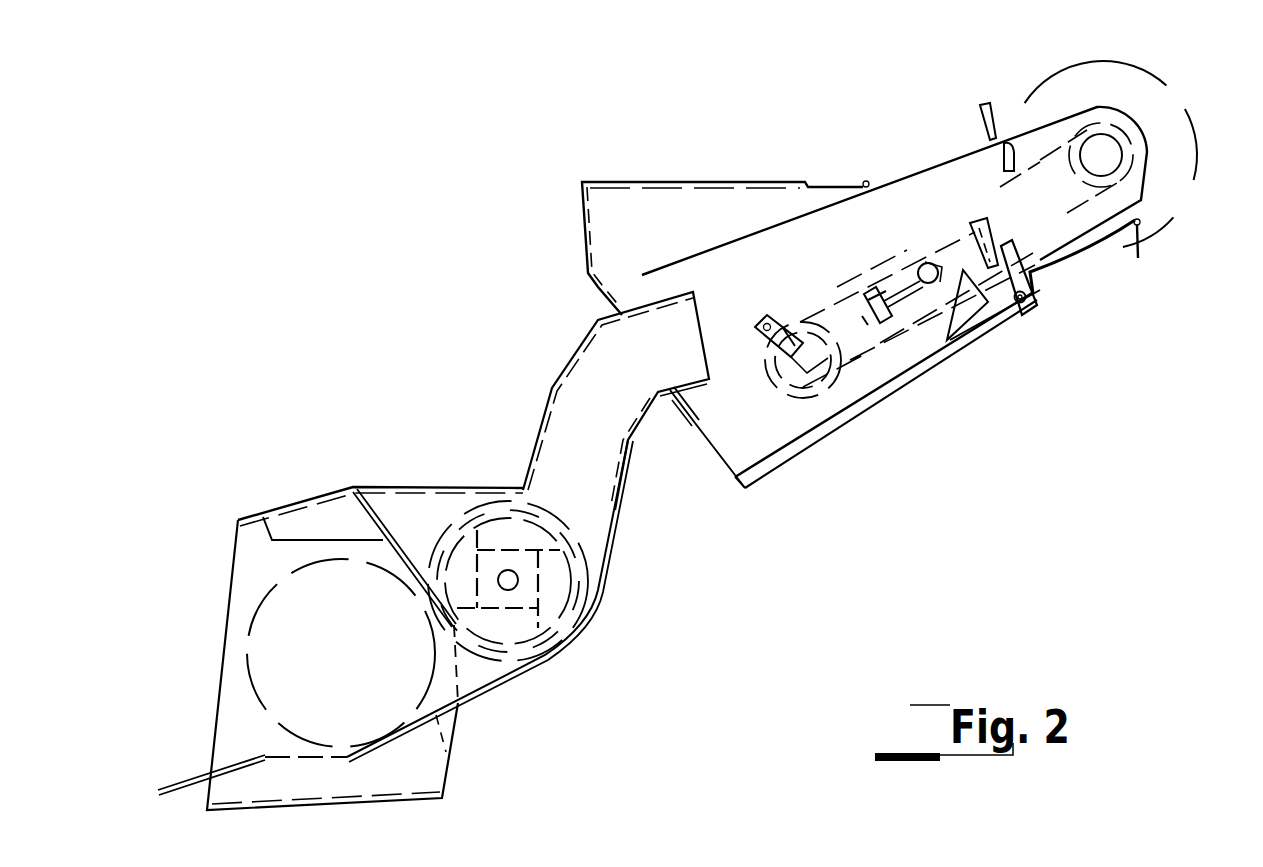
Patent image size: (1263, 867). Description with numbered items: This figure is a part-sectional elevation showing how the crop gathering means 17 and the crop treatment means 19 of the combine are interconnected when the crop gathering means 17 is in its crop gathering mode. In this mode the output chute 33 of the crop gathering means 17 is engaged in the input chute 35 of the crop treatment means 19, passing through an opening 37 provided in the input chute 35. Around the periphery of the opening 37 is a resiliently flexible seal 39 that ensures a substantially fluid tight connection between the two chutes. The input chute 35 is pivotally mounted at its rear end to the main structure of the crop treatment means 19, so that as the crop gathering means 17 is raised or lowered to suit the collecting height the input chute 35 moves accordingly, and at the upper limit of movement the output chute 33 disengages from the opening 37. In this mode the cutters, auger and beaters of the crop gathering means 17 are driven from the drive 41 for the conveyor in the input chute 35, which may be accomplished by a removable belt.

The crop gathering means 17 is at (284, 485).
The crop treatment means 19 is at (1053, 277).
The output chute 33 is at (577, 348).
The input chute 35 is at (747, 182).
The opening 37 is at (683, 395).
The resiliently flexible seal 39 is at (680, 407).
The drive 41 is at (1193, 130).